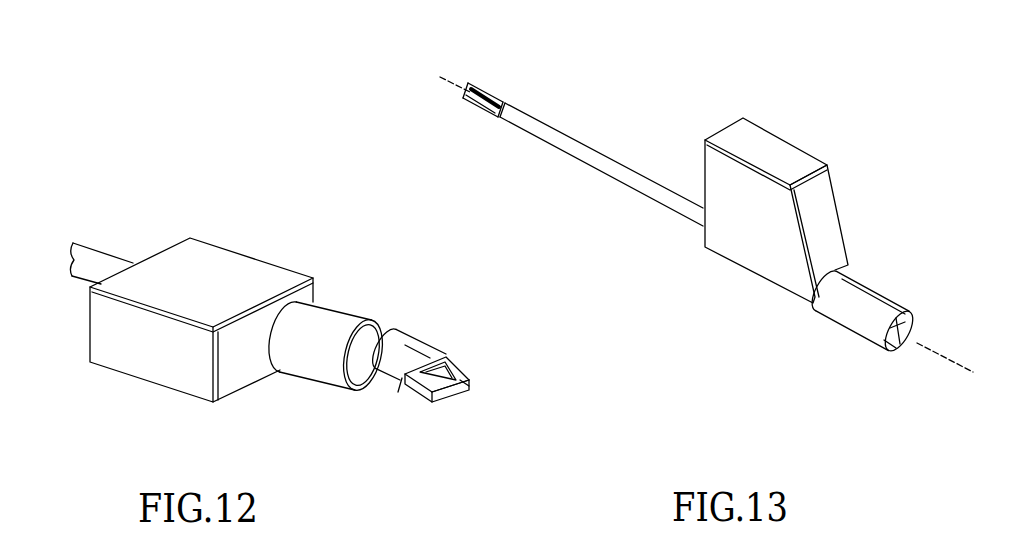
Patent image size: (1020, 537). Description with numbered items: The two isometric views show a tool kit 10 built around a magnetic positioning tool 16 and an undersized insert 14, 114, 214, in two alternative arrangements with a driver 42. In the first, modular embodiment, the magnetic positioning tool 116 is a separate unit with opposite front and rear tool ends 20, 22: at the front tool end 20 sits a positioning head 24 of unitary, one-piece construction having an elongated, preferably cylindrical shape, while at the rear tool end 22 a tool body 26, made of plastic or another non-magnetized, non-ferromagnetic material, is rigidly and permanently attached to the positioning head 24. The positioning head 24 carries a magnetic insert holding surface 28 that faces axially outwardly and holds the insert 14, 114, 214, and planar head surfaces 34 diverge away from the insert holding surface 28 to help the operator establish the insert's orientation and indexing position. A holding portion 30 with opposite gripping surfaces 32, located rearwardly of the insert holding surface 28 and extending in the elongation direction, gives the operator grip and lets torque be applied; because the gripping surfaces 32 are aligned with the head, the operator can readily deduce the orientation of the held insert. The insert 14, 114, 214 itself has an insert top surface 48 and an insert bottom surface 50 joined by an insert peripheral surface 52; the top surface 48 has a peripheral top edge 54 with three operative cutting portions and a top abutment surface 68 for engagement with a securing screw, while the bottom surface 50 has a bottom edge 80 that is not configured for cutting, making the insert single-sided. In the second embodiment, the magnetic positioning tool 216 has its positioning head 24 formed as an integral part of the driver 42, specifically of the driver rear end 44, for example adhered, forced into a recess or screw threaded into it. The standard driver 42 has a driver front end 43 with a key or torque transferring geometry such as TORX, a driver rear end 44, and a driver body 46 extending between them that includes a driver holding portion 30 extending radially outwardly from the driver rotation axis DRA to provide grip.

In FIG. 12, the tool kit 10 is at (458, 329).
In FIG. 12, the undersized insert 14 is at (543, 391).
In FIG. 12, the undersized insert 114 is at (543, 391).
In FIG. 12, the undersized insert 214 is at (543, 391).
In FIG. 12, the positioning tool 16 is at (214, 261).
In FIG. 12, the magnetic positioning tool 116 is at (214, 261).
In FIG. 12, the magnetic positioning tool 216 is at (214, 261).
In FIG. 12, the front tool end 20 is at (333, 393).
In FIG. 12, the rear tool end 22 is at (122, 378).
In FIG. 12, the positioning head 24 is at (428, 303).
In FIG. 13, the positioning head 24 is at (878, 360).
In FIG. 12, the tool body 26 is at (421, 293).
In FIG. 12, the insert holding surface 28 is at (398, 392).
In FIG. 13, the insert holding surface 28 is at (913, 328).
In FIG. 12, the holding portion 30 is at (201, 280).
In FIG. 13, the holding portion 30 is at (799, 190).
In FIG. 12, the gripping surfaces 32 is at (201, 267).
In FIG. 13, the gripping surfaces 32 is at (745, 188).
In FIG. 12, the head surfaces 34 is at (415, 350).
In FIG. 13, the head surfaces 34 is at (880, 343).
In FIG. 13, the driver 42 is at (583, 118).
In FIG. 13, the driver front end 43 is at (500, 82).
In FIG. 13, the driver rear end 44 is at (794, 151).
In FIG. 13, the driver body 46 is at (583, 118).
In FIG. 12, the insert top surface 48 is at (485, 341).
In FIG. 12, the top abutment surface 68 is at (440, 355).
In FIG. 12, the insert bottom surface 50 is at (438, 398).
In FIG. 12, the bottom edge 80 is at (429, 418).
In FIG. 12, the insert peripheral surface 52 is at (457, 403).
In FIG. 12, the peripheral top edge 54 is at (465, 377).
In FIG. 13, the driver rotation axis DRA is at (450, 80).